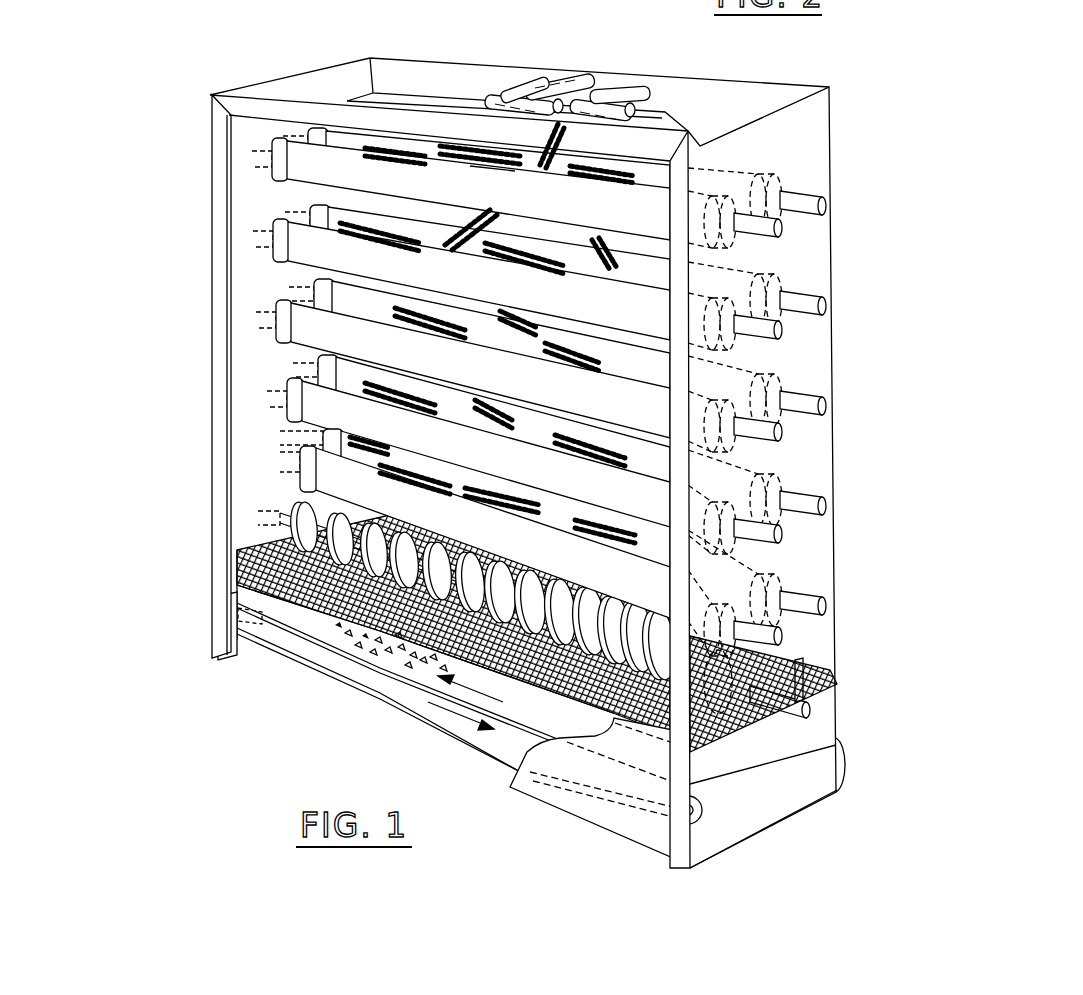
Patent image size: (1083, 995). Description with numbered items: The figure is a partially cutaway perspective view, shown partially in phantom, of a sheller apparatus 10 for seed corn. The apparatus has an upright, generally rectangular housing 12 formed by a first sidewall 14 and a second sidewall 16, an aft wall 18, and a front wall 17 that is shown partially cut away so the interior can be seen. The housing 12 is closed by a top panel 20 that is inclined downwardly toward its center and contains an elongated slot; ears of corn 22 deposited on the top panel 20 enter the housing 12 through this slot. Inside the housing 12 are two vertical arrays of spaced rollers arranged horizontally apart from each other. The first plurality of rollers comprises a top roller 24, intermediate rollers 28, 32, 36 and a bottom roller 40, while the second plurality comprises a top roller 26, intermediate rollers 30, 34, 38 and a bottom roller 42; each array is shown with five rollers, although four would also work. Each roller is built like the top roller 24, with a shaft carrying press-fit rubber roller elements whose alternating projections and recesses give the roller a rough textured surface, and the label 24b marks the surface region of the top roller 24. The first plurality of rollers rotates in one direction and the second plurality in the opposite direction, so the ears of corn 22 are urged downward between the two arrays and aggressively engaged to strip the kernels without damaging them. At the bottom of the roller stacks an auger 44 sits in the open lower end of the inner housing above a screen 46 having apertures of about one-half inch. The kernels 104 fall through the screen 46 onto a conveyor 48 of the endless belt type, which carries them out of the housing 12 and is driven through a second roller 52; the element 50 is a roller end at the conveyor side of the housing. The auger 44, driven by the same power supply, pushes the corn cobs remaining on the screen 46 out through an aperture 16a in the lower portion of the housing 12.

The sheller apparatus 10 is at (184, 148).
The housing 12 is at (200, 279).
The first sidewall 14 is at (255, 130).
The second sidewall 16 is at (805, 132).
The aperture 16a is at (793, 667).
The front wall 17 is at (641, 757).
The aft wall 18 is at (242, 178).
The top panel 20 is at (450, 80).
The ears of corn 22 is at (540, 88).
The top roller 24 is at (310, 158).
The roller surface 24b is at (515, 200).
The top roller 26 is at (345, 135).
The intermediate roller 28 is at (313, 238).
The intermediate roller 30 is at (415, 202).
The intermediate roller 32 is at (312, 318).
The intermediate roller 34 is at (330, 280).
The intermediate roller 36 is at (312, 397).
The intermediate roller 38 is at (330, 356).
The bottom roller 40 is at (312, 476).
The bottom roller 42 is at (330, 435).
The auger 44 is at (285, 514).
The screen 46 is at (290, 562).
The conveyor 48 is at (290, 610).
The chute roller 50 is at (258, 640).
The second roller 52 is at (722, 798).
The kernels 104 is at (353, 640).